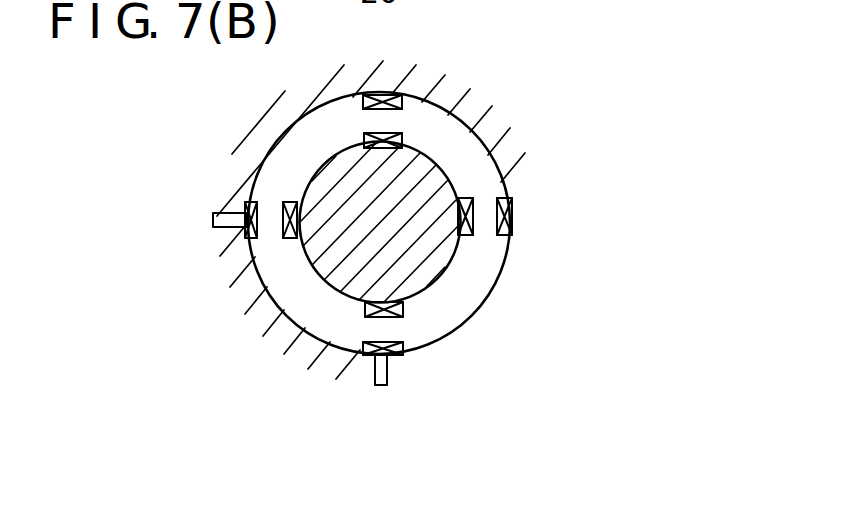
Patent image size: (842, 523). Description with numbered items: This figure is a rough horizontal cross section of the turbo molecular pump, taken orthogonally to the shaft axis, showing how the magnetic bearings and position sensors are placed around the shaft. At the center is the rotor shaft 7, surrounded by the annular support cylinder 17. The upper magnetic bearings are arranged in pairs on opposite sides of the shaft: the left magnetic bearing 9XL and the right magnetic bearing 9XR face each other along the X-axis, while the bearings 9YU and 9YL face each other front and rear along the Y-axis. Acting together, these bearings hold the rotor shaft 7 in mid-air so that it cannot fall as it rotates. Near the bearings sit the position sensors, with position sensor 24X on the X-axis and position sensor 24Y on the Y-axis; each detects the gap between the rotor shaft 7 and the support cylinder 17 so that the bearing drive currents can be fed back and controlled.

The rotor shaft 7 is at (420, 168).
The support cylinder 17 is at (512, 273).
The upper magnetic bearing (Y-axis, one side) 9YU is at (380, 95).
The upper magnetic bearing (Y-axis, other side) 9YL is at (400, 308).
The left magnetic bearing 9XL is at (292, 201).
The right magnetic bearing 9XR is at (466, 198).
The position sensor (X-axis) 24X is at (213, 219).
The position sensor (Y-axis) 24Y is at (375, 378).